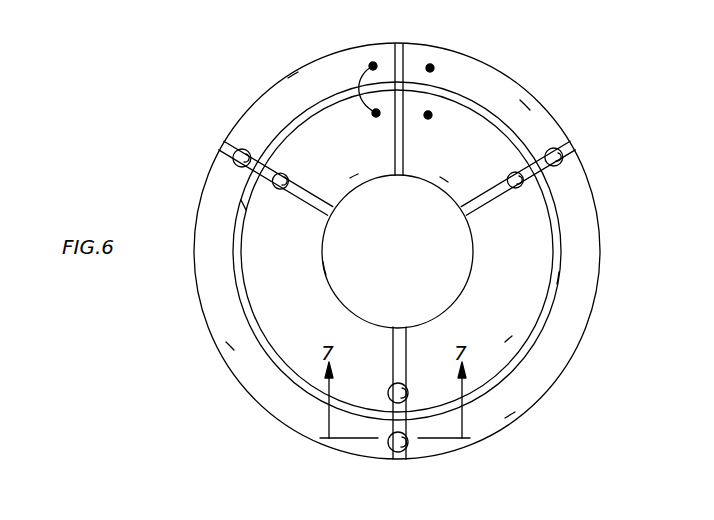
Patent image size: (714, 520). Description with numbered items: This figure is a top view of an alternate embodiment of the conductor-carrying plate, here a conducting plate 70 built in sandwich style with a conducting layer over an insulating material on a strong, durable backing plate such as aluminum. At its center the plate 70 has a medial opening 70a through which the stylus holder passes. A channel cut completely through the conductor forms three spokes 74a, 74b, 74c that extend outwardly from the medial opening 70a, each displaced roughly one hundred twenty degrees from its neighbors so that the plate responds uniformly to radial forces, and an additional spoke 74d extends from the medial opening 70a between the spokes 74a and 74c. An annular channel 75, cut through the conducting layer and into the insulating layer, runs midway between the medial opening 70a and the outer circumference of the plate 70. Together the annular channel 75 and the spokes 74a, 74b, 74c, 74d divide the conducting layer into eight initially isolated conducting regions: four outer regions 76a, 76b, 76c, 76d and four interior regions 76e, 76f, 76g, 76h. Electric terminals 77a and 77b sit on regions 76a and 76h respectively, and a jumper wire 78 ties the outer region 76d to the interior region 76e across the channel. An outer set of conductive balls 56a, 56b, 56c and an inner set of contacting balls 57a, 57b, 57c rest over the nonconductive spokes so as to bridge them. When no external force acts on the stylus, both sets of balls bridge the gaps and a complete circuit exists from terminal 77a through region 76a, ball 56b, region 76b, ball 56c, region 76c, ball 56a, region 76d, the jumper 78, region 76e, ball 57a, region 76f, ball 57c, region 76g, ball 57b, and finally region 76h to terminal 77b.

The conducting plate 70 is at (247, 418).
The medial opening 70a is at (422, 262).
The spoke 74a is at (309, 203).
The spoke 74b is at (400, 327).
The spoke 74c is at (478, 221).
The additional spoke 74d is at (402, 45).
The annular channel 75 is at (243, 204).
The outer conducting region 76a is at (523, 108).
The outer conducting region 76b is at (512, 418).
The outer conducting region 76c is at (230, 347).
The outer conducting region 76d is at (294, 80).
The interior conducting region 76e is at (353, 173).
The interior conducting region 76f is at (300, 270).
The interior conducting region 76g is at (507, 345).
The interior conducting region 76h is at (467, 181).
The electric terminal 77a is at (434, 68).
The electric terminal 77b is at (430, 120).
The jumper wire 78 is at (373, 66).
The conductive ball 56a is at (234, 152).
The conductive ball 56b is at (565, 153).
The conductive ball 56c is at (393, 456).
The contacting ball 57a is at (290, 178).
The contacting ball 57b is at (512, 190).
The contacting ball 57c is at (389, 390).